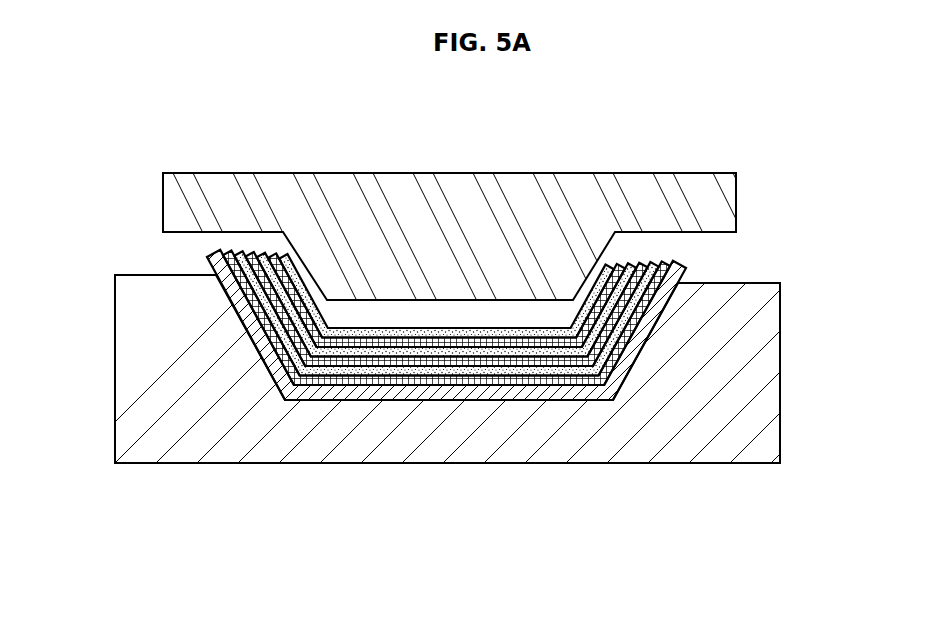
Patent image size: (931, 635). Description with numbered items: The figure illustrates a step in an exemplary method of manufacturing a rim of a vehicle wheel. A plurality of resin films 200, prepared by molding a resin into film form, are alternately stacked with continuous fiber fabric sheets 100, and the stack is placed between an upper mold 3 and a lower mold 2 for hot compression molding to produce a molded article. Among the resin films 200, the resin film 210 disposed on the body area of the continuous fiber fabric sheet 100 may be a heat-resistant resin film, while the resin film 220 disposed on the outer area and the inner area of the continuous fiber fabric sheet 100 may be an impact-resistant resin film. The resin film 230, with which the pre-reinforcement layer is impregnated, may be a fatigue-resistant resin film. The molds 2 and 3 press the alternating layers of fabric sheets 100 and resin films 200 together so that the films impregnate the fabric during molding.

The mold 3 is at (172, 202).
The mold 2 is at (132, 428).
The continuous fiber fabric sheet 100 is at (451, 410).
The resin film 200 is at (415, 410).
The heat-resistant resin film 210 is at (445, 398).
The impact-resistant resin film 220 is at (268, 360).
The fatigue-resistant resin film 230 is at (395, 330).